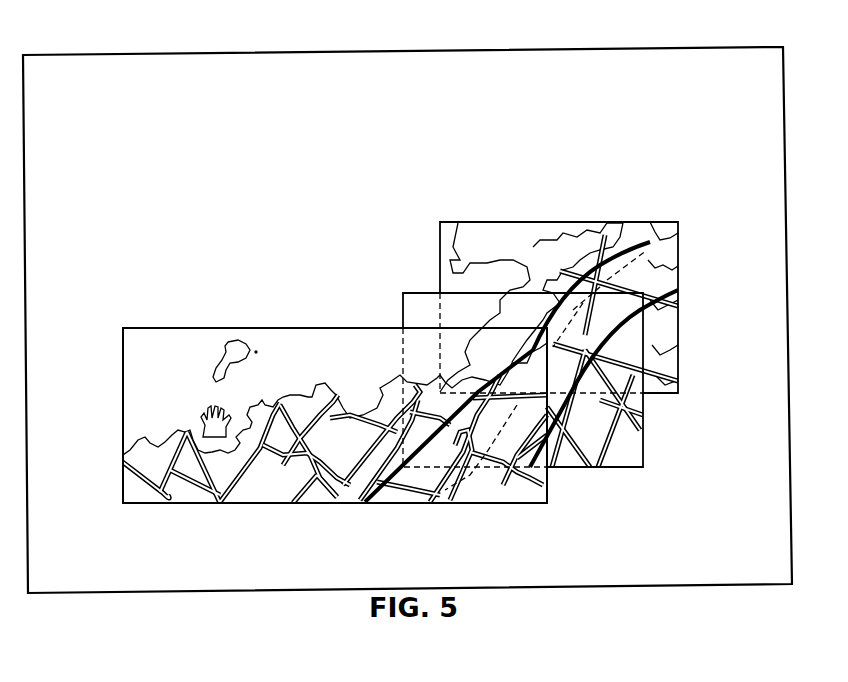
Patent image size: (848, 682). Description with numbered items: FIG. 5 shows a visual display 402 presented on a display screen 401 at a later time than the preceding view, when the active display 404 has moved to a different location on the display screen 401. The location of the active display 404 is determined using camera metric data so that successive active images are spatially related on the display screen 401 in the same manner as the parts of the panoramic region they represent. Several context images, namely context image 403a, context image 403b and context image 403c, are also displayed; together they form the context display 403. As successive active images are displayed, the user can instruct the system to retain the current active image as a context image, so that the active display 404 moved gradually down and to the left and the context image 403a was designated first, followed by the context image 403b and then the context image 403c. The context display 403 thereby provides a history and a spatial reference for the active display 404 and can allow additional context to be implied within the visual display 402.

The display screen 401 is at (612, 590).
The visual display 402 is at (236, 132).
The context display 403 is at (378, 376).
The context image 403a is at (614, 222).
The context image 403b is at (637, 478).
The context image 403c is at (402, 506).
The active display 404 is at (121, 400).